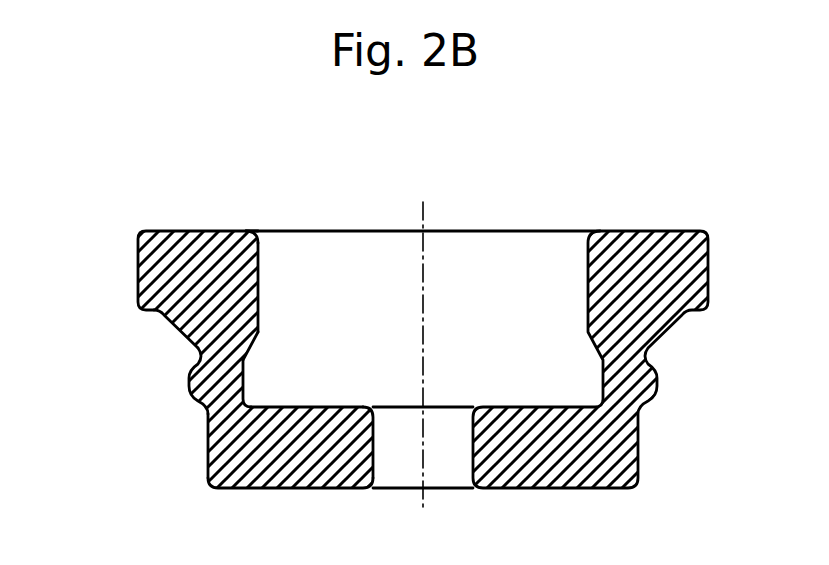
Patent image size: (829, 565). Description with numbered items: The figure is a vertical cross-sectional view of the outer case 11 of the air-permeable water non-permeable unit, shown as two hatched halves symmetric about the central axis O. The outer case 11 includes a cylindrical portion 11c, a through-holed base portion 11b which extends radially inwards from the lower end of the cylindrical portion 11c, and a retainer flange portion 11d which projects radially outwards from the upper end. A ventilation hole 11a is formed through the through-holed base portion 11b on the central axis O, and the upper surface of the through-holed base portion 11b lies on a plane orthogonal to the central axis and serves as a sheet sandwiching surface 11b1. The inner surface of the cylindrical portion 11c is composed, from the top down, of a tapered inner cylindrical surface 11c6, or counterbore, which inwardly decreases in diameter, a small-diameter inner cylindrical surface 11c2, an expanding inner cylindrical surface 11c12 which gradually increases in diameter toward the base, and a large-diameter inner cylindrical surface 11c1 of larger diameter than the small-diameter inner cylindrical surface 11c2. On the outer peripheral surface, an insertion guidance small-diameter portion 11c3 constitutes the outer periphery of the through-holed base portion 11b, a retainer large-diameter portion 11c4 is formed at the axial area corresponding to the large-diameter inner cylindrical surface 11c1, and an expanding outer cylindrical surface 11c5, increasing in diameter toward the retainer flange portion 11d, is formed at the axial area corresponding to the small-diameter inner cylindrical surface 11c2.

The outer case 11 is at (680, 196).
The ventilation hole 11a is at (372, 448).
The through-holed base portion 11b is at (263, 486).
The sheet sandwiching surface 11b1 is at (330, 405).
The cylindrical portion 11c is at (208, 262).
The large-diameter inner cylindrical surface 11c1 is at (244, 378).
The expanding inner cylindrical surface 11c12 is at (259, 348).
The small-diameter inner cylindrical surface 11c2 is at (259, 277).
The insertion guidance small-diameter portion 11c3 is at (208, 444).
The retainer large-diameter portion 11c4 is at (190, 380).
The expanding outer cylindrical surface 11c5 is at (187, 332).
The tapered inner cylindrical surface 11c6 is at (249, 235).
The retainer flange portion 11d is at (151, 242).